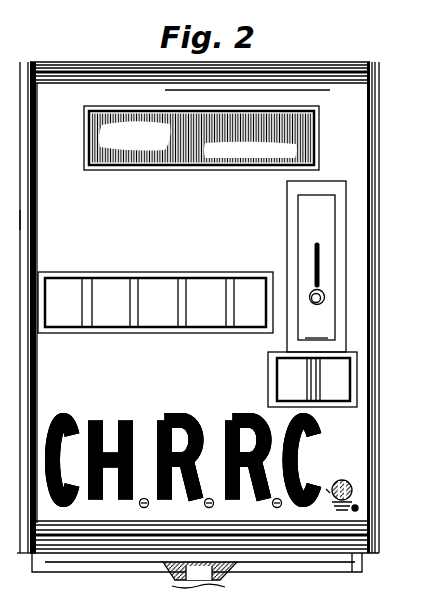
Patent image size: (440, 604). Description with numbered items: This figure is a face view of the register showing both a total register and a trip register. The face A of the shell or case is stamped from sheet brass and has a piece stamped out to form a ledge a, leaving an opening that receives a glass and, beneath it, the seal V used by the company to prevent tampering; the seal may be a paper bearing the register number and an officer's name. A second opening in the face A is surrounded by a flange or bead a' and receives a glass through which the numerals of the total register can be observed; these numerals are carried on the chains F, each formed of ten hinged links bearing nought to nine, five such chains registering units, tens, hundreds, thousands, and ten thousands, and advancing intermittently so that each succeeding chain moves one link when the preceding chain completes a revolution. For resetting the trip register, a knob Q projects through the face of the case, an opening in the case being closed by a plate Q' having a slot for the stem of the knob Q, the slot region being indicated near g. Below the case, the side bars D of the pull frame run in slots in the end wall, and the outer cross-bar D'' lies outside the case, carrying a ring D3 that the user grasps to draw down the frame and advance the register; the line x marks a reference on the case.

The face of the case A is at (198, 307).
The ledge a is at (207, 140).
The flange or bead a' is at (155, 305).
The chains F is at (97, 288).
The seal V is at (302, 266).
The pin g is at (320, 263).
The knob Q is at (354, 297).
The plate Q' is at (316, 328).
The section line x is at (10, 219).
The side bars D is at (196, 568).
The cross-bar D'' is at (200, 580).
The ring D3 is at (200, 583).